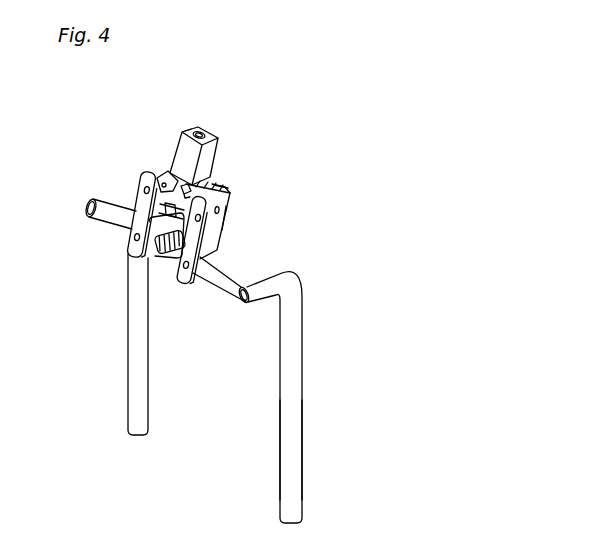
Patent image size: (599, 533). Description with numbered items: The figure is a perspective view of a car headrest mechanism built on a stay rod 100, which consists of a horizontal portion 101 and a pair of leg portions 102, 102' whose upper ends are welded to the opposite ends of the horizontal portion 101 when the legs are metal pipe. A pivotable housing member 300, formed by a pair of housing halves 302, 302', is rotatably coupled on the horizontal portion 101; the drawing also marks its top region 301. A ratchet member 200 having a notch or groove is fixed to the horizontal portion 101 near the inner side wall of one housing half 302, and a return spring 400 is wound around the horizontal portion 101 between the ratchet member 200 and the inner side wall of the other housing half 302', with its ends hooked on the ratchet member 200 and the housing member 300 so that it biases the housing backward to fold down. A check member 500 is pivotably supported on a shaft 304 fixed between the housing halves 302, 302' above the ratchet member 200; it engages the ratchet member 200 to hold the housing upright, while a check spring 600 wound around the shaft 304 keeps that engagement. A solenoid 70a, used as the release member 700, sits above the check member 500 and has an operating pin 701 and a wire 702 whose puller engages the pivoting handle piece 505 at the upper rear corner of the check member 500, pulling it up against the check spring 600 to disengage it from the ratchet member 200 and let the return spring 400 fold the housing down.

The stay rod 100 is at (300, 432).
The horizontal portion 101 is at (222, 272).
The leg portion 102 is at (99, 344).
The leg portion 102' is at (312, 397).
The ratchet member 200 is at (128, 227).
The pivotable housing member 300 is at (232, 197).
The top surface of block 301 is at (235, 188).
The housing half 302 is at (140, 184).
The housing half 302' is at (234, 240).
The shaft 304 is at (227, 218).
The return spring 400 is at (168, 262).
The check member 500 is at (153, 171).
The pivoting handle piece 505 is at (181, 184).
The check spring 600 is at (138, 188).
The release member 700 is at (186, 131).
The operating pin 701 is at (201, 129).
The wire 702 is at (211, 186).
The solenoid 70a is at (212, 152).